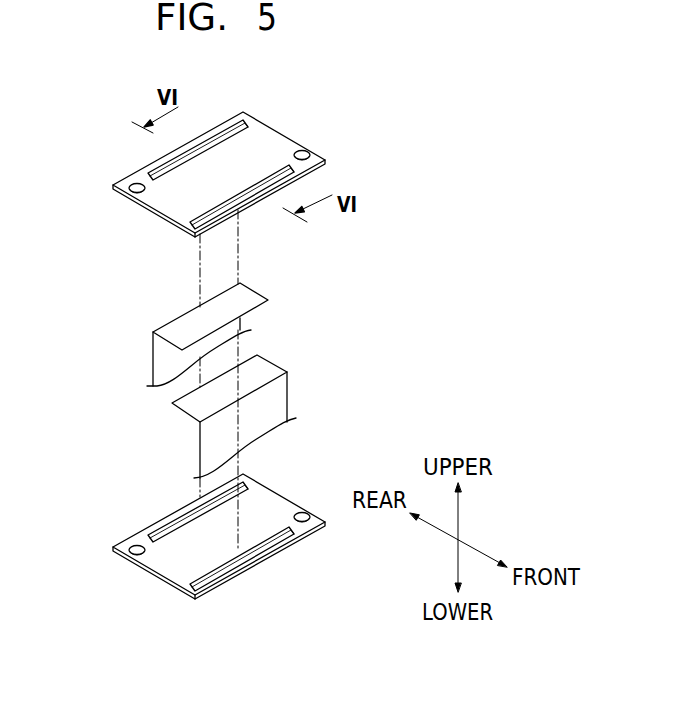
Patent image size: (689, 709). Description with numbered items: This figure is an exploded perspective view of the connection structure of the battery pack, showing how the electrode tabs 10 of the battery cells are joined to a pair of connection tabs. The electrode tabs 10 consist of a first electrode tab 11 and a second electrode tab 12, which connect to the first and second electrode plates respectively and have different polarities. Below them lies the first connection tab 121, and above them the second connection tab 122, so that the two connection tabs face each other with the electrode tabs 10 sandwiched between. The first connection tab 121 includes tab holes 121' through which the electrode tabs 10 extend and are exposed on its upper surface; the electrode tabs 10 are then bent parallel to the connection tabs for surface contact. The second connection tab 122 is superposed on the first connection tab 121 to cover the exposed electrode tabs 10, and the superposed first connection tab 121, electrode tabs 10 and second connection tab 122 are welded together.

The electrode tab 10 is at (68, 367).
The first electrode tab 11 is at (157, 360).
The second electrode tab 12 is at (206, 447).
The first connection tab 121 is at (230, 540).
The tab hole 121' is at (242, 584).
The second connection tab 122 is at (273, 137).